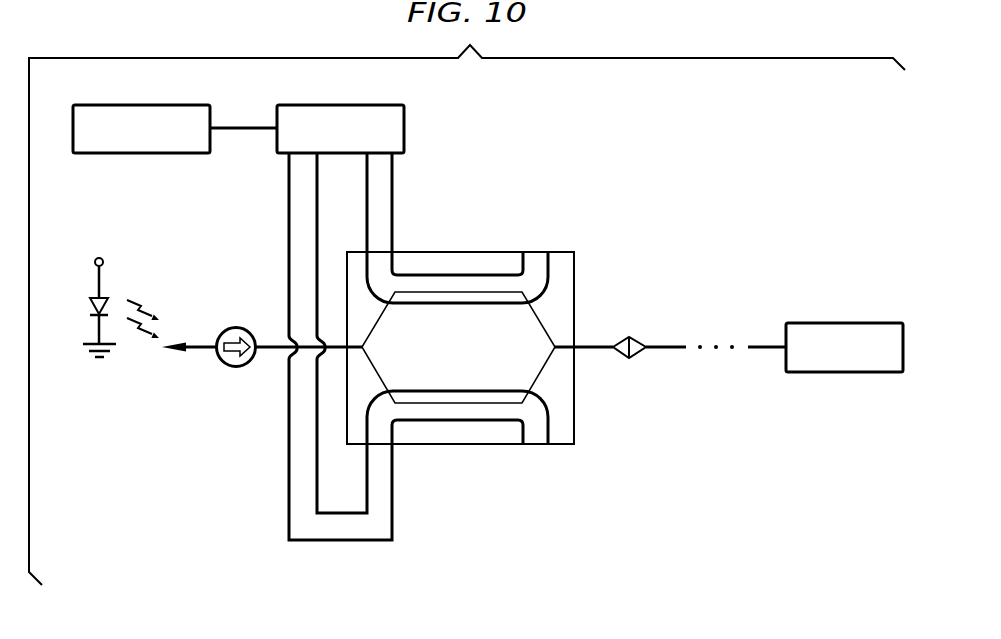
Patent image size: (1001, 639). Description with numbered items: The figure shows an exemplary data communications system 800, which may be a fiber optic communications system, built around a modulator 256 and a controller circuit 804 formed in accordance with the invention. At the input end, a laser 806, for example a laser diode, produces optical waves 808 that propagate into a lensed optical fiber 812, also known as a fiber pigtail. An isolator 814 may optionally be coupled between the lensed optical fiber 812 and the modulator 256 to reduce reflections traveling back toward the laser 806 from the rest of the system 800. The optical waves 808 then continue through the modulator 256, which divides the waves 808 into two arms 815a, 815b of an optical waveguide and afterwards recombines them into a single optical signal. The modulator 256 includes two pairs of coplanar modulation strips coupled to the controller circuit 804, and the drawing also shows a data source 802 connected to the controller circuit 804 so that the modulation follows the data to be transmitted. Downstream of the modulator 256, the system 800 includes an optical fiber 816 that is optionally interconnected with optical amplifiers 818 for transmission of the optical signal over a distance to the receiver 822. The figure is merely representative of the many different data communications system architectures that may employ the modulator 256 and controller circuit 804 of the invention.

The data communications system 800 is at (586, 161).
The data source 802 is at (139, 153).
The controller circuit 804 is at (405, 128).
The laser 806 is at (91, 304).
The optical waves 808 is at (136, 330).
The lensed optical fiber 812 is at (193, 351).
The isolator 814 is at (235, 330).
The modulator 256 is at (562, 263).
The first arm of optical waveguide 815a is at (385, 307).
The second arm of optical waveguide 815b is at (385, 386).
The optical fiber 816 is at (593, 350).
The optical amplifiers 818 is at (637, 342).
The receiver 822 is at (845, 323).